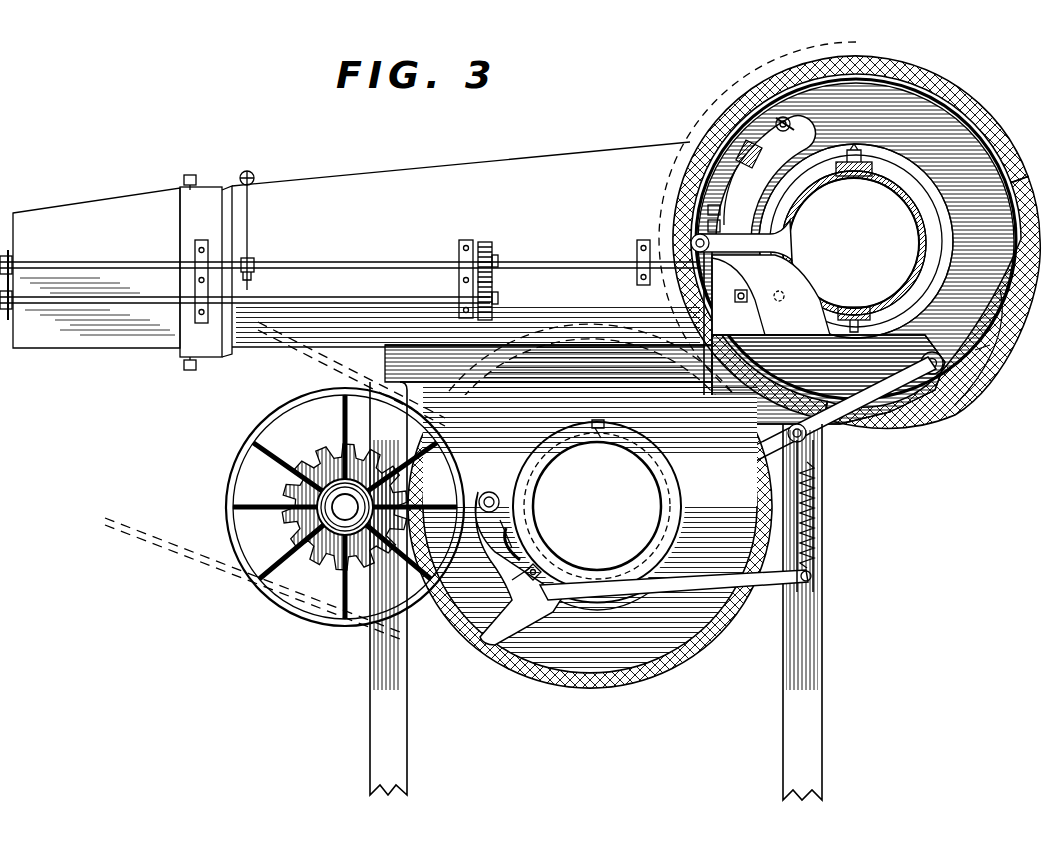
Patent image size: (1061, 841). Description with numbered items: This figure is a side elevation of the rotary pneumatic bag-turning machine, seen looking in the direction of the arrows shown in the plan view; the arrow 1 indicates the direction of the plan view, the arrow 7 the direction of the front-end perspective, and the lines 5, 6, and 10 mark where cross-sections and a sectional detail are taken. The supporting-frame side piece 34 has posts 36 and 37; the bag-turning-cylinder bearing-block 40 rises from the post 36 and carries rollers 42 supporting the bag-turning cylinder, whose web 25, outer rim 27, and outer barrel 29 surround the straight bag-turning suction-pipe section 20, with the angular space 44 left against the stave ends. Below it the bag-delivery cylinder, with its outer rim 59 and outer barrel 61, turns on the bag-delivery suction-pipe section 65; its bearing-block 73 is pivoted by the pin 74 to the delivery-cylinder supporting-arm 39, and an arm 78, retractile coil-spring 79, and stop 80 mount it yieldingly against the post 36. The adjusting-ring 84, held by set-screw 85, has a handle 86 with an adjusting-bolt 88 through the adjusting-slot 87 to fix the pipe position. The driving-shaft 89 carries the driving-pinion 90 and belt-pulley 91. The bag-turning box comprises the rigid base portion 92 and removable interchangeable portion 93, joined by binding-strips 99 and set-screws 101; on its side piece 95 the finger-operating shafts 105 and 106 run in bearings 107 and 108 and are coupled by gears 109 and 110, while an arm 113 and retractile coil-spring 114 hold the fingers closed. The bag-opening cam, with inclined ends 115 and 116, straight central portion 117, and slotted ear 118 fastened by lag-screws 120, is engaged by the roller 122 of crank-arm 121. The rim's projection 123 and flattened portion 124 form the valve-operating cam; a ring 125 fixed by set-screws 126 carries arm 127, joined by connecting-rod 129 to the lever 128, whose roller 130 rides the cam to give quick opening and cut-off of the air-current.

The arrow 1 is at (222, 35).
The section line 5 is at (851, 500).
The section line 6 is at (595, 735).
The arrow 7 is at (30, 165).
The section line 10 is at (750, 338).
The bag-turning suction-pipe section 20 is at (791, 258).
The web 25 is at (985, 150).
The outer rim 27 is at (955, 140).
The outer barrel 29 is at (1000, 170).
The side piece 34 is at (548, 363).
The post 36 is at (822, 657).
The post 37 is at (400, 680).
The delivery-cylinder supporting-arm 39 is at (482, 490).
The bag-turning-cylinder bearing-block 40 is at (771, 295).
The roller 42 is at (854, 150).
The angular space 44 is at (740, 132).
The outer rim 59 is at (546, 670).
The outer barrel 61 is at (590, 512).
The bag-delivery suction-pipe section 65 is at (660, 528).
The bearing-block 73 is at (506, 522).
The pin 74 is at (498, 503).
The arm 78 is at (775, 600).
The retractile coil-spring 79 is at (815, 540).
The stop 80 is at (814, 574).
The adjusting-ring 84 is at (615, 430).
The set-screw 85 is at (635, 430).
The handle 86 is at (510, 582).
The adjusting-slot 87 is at (518, 562).
The adjusting-bolt 88 is at (533, 578).
The driving-shaft 89 is at (333, 500).
The driving-pinion 90 is at (328, 507).
The belt-pulley 91 is at (233, 518).
The rigid base portion 92 is at (461, 164).
The removable interchangeable portion 93 is at (94, 268).
The side piece 95 is at (468, 275).
The binding-strip 99 is at (206, 271).
The set-screw 101 is at (190, 175).
The finger-operating shaft 105 is at (126, 262).
The finger-operating shaft 106 is at (140, 305).
The bearing 107 is at (204, 293).
The bearing 108 is at (466, 240).
The gear 109 is at (492, 244).
The gear 110 is at (494, 312).
The arm 113 is at (252, 229).
The retractile coil-spring 114 is at (254, 177).
The inclined end 115 is at (736, 150).
The inclined end 116 is at (705, 282).
The straight central portion 117 is at (722, 190).
The slotted ear 118 is at (781, 116).
The lag-screw 120 is at (772, 116).
The crank-arm 121 is at (708, 228).
The roller 122 is at (708, 212).
The projection 123 is at (932, 302).
The flattened portion 124 is at (965, 318).
The ring 125 is at (907, 190).
The set-screw 126 is at (838, 162).
The arm 127 is at (741, 240).
The lever 128 is at (875, 415).
The connecting-rod 129 is at (702, 357).
The roller 130 is at (943, 374).